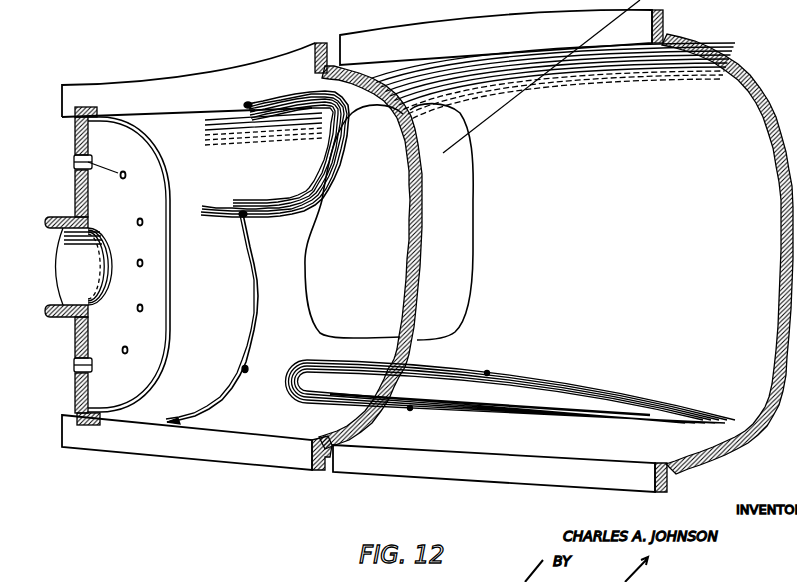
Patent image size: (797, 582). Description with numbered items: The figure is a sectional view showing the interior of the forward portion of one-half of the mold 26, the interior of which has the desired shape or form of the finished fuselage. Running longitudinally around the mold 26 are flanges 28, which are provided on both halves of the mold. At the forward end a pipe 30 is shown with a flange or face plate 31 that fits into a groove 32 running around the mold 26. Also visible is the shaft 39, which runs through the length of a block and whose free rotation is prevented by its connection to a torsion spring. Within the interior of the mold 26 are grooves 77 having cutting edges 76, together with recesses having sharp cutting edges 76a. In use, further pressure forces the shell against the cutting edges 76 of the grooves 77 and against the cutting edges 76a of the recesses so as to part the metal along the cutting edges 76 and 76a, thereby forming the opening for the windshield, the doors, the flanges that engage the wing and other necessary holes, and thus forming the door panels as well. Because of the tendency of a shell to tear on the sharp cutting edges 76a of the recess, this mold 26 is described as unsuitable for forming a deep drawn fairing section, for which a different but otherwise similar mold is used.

The mold 26 is at (733, 60).
The flanges 28 is at (380, 43).
The pipe 30 is at (60, 217).
The flange or face plate 31 is at (82, 398).
The groove 32 is at (83, 423).
The shaft 39 is at (76, 367).
The cutting edges 76 is at (443, 377).
The cutting edges of the recesses 76a is at (473, 200).
The grooves 77 is at (487, 373).